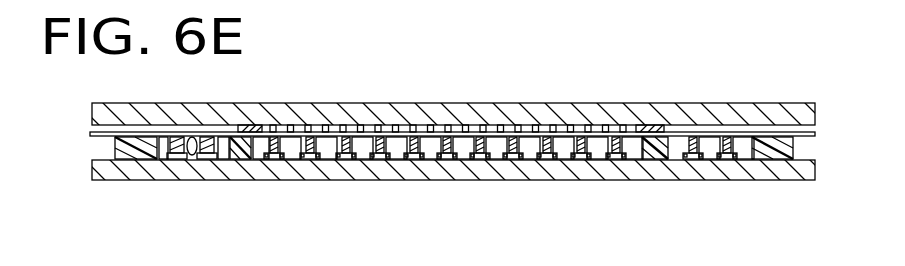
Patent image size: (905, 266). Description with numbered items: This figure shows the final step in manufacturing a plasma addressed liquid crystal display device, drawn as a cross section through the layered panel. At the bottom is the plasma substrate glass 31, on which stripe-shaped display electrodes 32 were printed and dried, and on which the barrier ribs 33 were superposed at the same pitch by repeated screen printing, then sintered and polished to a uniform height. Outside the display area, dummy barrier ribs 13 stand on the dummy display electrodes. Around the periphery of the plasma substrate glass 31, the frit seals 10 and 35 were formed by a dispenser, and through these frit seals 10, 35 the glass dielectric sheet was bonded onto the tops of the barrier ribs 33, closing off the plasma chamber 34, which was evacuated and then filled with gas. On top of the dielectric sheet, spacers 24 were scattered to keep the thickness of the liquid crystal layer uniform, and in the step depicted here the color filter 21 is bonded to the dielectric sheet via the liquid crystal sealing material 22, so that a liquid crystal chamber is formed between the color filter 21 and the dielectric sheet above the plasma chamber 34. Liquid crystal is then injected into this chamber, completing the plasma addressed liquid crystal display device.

The frit seal 10 is at (135, 148).
The dummy barrier rib 13 is at (193, 137).
The color filter 21 is at (480, 110).
The liquid crystal sealing material 22 is at (256, 126).
The spacer 24 is at (352, 126).
The plasma substrate glass 31 is at (304, 158).
The display electrode 32 is at (331, 158).
The barrier rib 33 is at (401, 150).
The plasma chamber 34 is at (431, 158).
The frit seal 35 is at (237, 150).